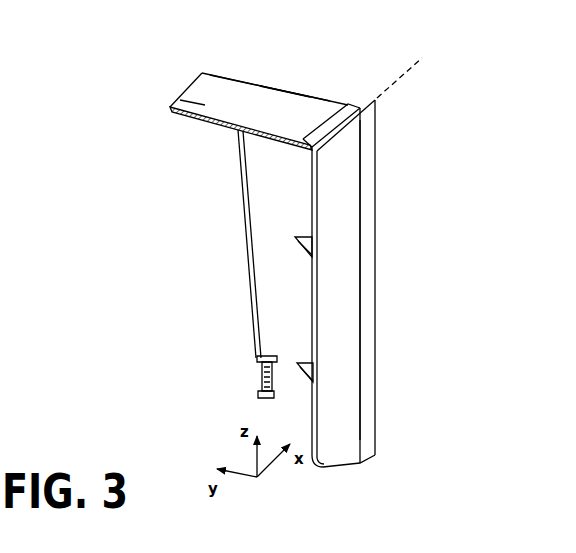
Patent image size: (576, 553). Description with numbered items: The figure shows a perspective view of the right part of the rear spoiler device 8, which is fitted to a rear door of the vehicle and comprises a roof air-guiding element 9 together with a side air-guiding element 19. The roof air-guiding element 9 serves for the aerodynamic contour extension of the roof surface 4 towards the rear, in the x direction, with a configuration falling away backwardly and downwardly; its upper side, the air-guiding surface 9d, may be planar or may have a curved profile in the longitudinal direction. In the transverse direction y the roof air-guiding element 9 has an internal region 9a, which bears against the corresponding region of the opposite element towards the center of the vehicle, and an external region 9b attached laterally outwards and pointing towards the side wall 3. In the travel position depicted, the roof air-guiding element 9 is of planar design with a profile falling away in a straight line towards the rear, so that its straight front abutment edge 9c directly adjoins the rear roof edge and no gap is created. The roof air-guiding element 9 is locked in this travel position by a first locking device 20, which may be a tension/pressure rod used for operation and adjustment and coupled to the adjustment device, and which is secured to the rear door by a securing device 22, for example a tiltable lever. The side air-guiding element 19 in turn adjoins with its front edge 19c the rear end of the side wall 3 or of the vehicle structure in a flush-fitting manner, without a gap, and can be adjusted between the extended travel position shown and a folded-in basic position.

The side wall 3 is at (382, 113).
The roof surface 4 is at (363, 80).
The rear spoiler device 8 is at (120, 269).
The roof air-guiding element 9 is at (172, 104).
The internal region 9a is at (235, 92).
The external region 9b is at (332, 118).
The front abutment edge 9c is at (292, 90).
The air-guiding surface 9d is at (214, 105).
The side air-guiding element 19 is at (333, 313).
The front edge 19c is at (362, 243).
The first locking device 20 is at (246, 268).
The securing device 22 is at (257, 373).